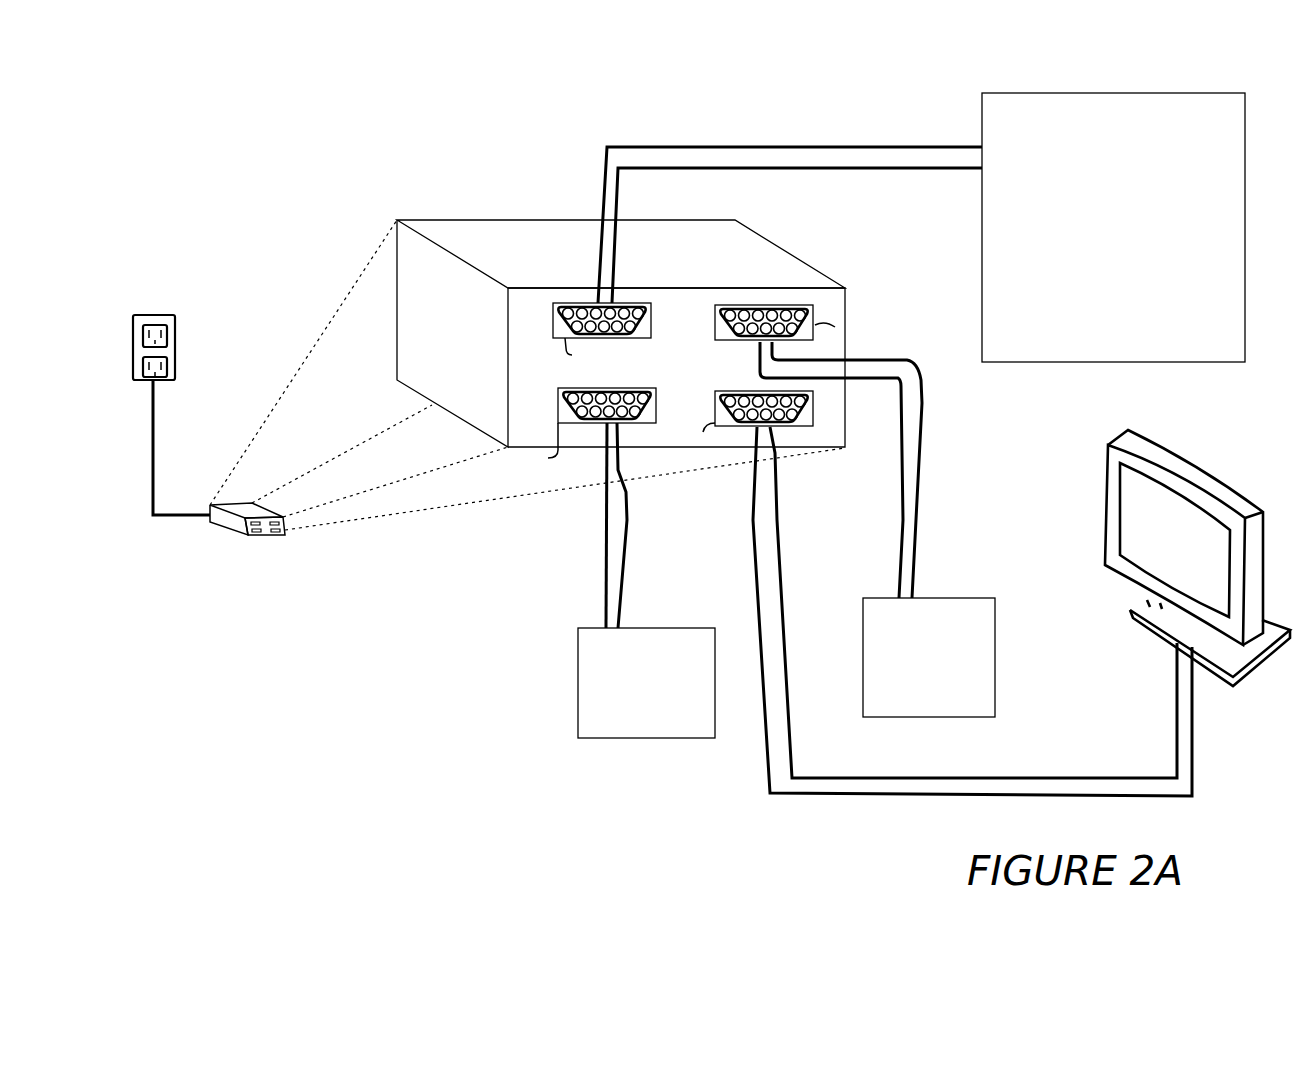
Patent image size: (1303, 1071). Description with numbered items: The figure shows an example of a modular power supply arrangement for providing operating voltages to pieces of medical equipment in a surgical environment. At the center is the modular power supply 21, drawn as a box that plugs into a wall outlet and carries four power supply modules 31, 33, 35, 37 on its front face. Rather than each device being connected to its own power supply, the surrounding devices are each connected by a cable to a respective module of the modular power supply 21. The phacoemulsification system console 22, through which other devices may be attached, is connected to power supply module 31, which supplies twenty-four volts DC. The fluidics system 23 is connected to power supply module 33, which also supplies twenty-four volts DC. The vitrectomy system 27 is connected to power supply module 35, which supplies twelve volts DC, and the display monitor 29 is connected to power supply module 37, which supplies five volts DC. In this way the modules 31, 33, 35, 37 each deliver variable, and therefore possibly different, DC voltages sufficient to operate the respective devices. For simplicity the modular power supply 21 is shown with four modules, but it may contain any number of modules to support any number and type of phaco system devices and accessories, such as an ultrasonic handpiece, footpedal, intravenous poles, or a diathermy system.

The modular power supply 21 is at (455, 221).
The phacoemulsification system console 22 is at (1168, 93).
The fluidics system 23 is at (941, 598).
The vitrectomy system 27 is at (656, 628).
The display monitor 29 is at (1228, 478).
The power supply module 31 is at (553, 314).
The power supply module 33 is at (715, 314).
The power supply module 35 is at (558, 396).
The power supply module 37 is at (715, 396).